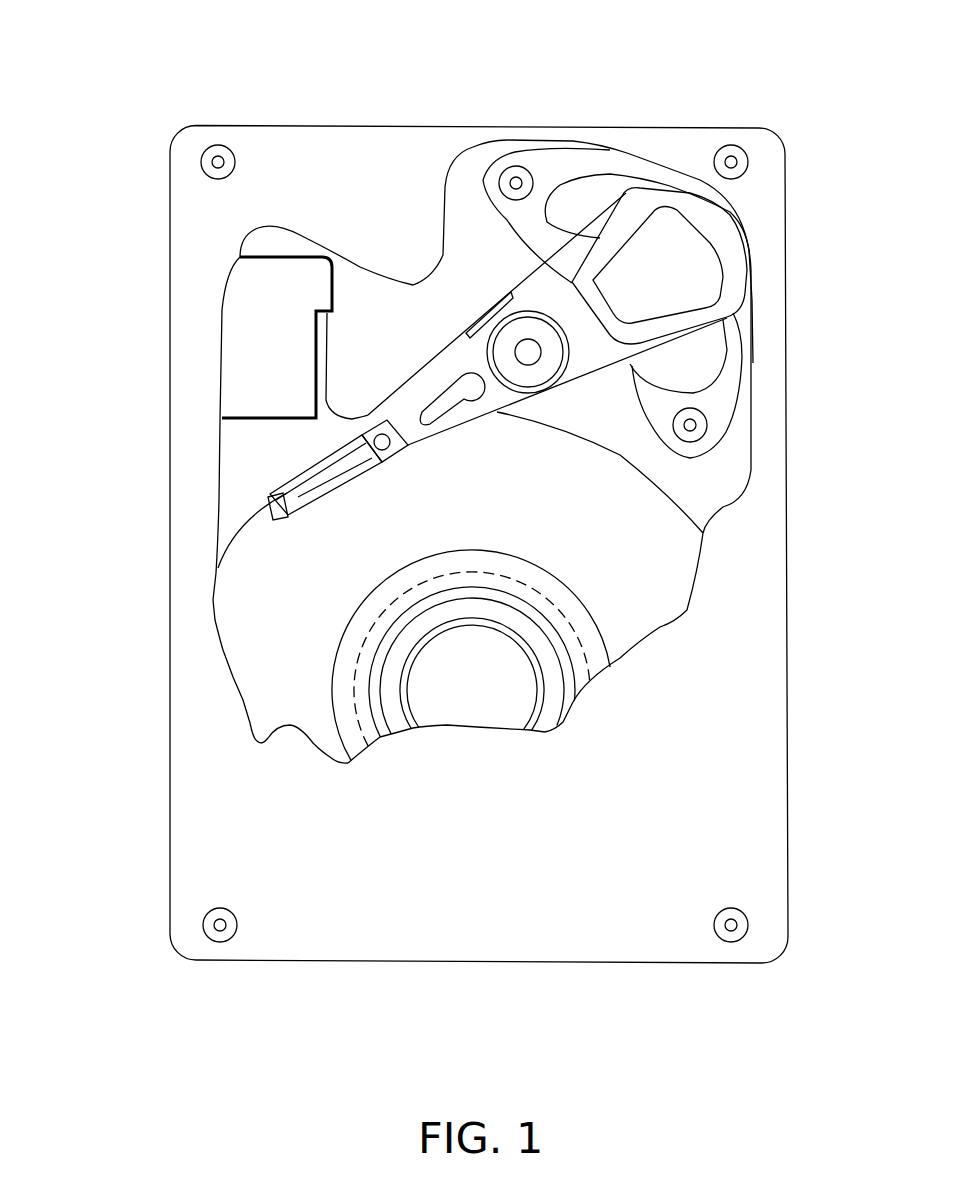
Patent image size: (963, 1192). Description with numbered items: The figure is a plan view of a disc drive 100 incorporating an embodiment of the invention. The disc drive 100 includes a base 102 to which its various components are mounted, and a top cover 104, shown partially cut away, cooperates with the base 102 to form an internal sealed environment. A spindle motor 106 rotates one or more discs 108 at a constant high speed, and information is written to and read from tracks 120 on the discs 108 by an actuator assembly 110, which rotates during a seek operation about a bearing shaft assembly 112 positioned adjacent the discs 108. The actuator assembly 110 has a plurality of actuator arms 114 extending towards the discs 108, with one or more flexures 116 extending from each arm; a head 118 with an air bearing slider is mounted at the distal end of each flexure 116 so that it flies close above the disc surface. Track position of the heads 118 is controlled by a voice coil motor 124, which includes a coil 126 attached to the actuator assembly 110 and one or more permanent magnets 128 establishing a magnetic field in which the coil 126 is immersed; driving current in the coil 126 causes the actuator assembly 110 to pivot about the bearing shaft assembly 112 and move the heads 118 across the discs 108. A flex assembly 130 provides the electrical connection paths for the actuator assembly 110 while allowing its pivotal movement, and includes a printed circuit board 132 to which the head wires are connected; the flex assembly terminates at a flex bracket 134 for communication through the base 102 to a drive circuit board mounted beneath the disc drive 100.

The disc drive 100 is at (189, 73).
The base 102 is at (237, 459).
The top cover 104 is at (237, 813).
The spindle motor 106 is at (471, 690).
The discs 108 is at (635, 613).
The actuator assembly 110 is at (503, 422).
The bearing shaft assembly 112 is at (532, 355).
The actuator arms 114 is at (457, 432).
The flexures 116 is at (310, 492).
The head 118 is at (272, 513).
The tracks 120 is at (553, 577).
The voice coil motor 124 is at (597, 190).
The coil 126 is at (735, 268).
The permanent magnets 128 is at (558, 217).
The flex assembly 130 is at (433, 359).
The printed circuit board 132 is at (490, 308).
The flex bracket 134 is at (260, 328).